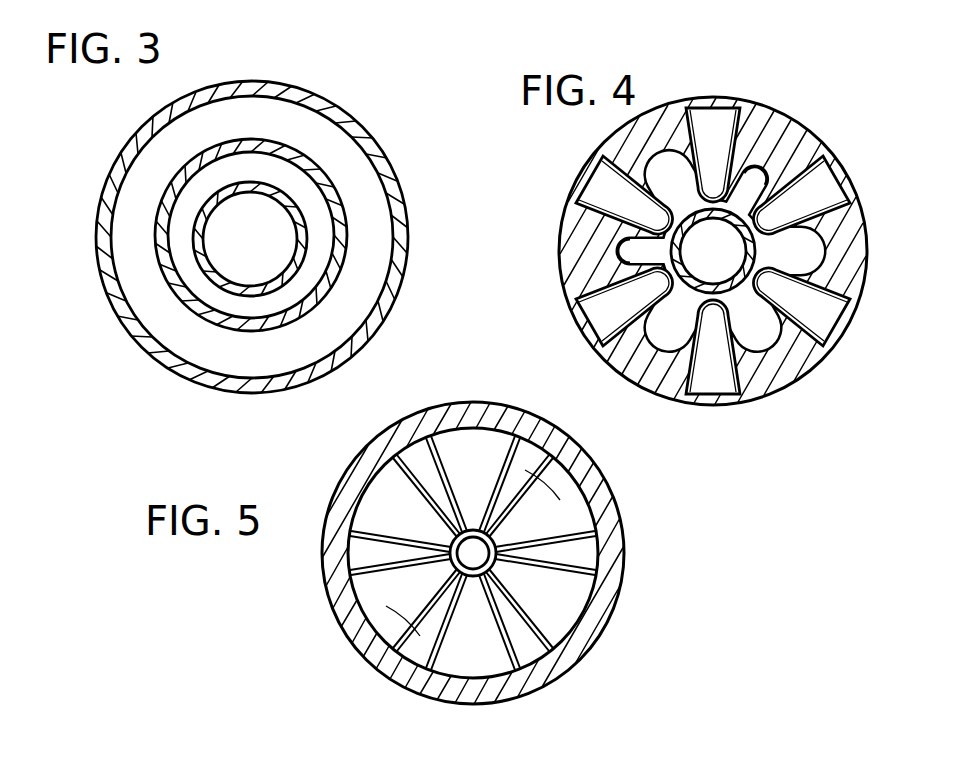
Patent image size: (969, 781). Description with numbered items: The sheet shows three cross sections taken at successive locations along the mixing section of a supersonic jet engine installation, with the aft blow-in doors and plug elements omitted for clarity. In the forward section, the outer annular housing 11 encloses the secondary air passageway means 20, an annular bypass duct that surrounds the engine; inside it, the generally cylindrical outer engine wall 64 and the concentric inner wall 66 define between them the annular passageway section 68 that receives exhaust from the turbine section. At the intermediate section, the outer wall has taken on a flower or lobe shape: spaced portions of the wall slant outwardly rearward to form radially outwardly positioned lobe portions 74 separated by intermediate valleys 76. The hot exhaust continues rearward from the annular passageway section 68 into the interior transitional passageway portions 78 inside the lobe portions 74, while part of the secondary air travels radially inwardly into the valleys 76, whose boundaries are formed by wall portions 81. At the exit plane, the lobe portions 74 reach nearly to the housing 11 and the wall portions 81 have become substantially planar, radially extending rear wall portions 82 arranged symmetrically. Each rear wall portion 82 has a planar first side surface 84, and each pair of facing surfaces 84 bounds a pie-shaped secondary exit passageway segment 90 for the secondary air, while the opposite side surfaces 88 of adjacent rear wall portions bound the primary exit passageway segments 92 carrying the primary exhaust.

In FIG. 3, the outer annular housing 11 is at (133, 130).
In FIG. 3, the secondary air passageway means 20 is at (143, 158).
In FIG. 3, the outer engine wall 64 is at (170, 187).
In FIG. 3, the inner wall 66 is at (200, 213).
In FIG. 3, the annular passageway section 68 is at (173, 238).
In FIG. 4, the lobe portions 74 is at (760, 167).
In FIG. 4, the valleys 76 is at (637, 207).
In FIG. 4, the interior transitional passageway portions 78 is at (763, 170).
In FIG. 4, the wall portions 81 is at (610, 262).
In FIG. 5, the rear wall portions 82 is at (410, 490).
In FIG. 5, the first side surface 84 is at (578, 508).
In FIG. 5, the opposite side surface 88 is at (375, 562).
In FIG. 5, the secondary exit passageway segments 90 is at (375, 457).
In FIG. 5, the primary exit passageway segments 92 is at (418, 453).